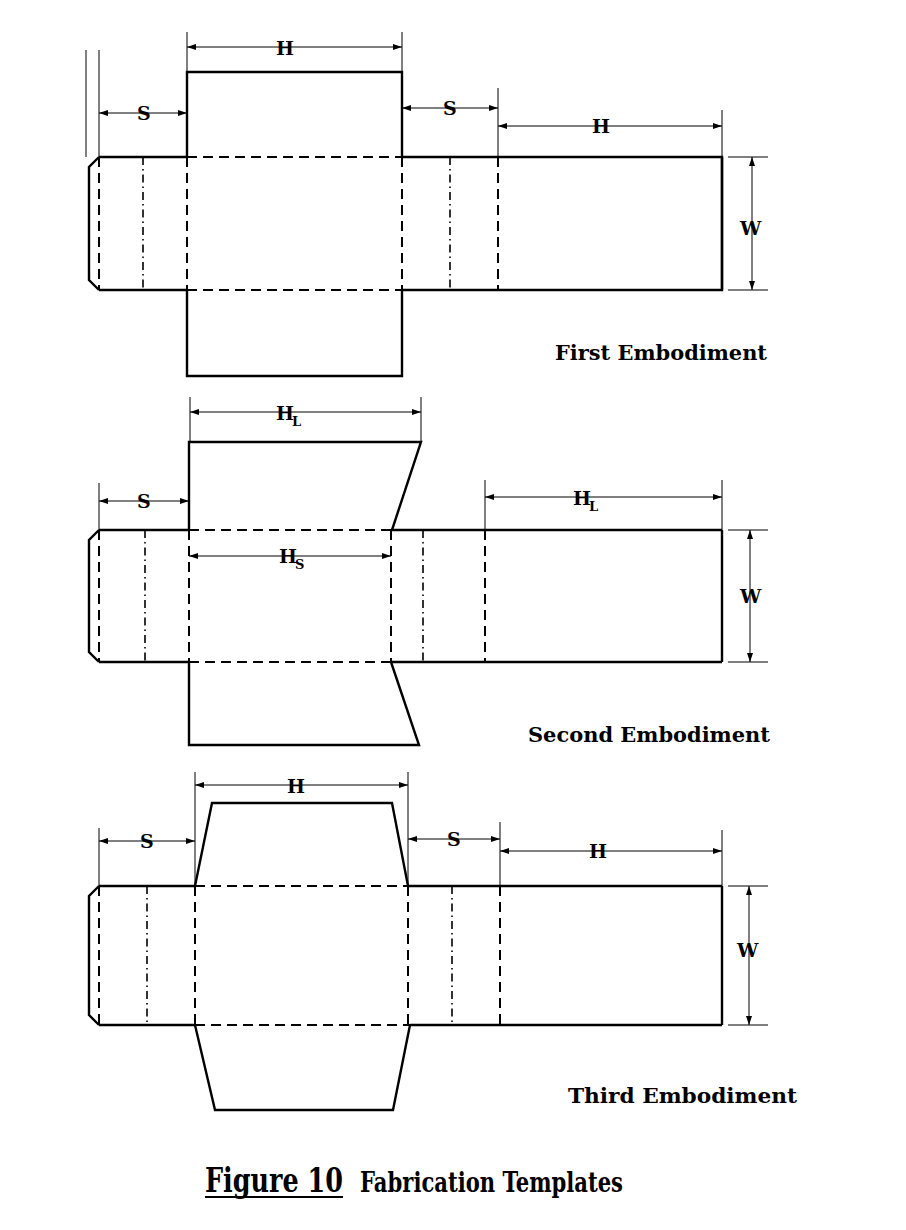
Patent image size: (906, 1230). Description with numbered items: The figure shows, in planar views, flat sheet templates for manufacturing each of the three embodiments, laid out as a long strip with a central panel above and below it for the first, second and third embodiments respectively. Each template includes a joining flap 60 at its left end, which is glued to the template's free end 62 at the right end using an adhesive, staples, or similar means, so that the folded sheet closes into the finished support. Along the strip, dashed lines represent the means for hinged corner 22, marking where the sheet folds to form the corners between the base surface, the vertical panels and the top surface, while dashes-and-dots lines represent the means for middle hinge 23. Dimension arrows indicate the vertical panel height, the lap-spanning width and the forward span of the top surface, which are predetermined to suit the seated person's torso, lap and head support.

The hinged corner 22 is at (97, 203).
The middle hinge 23 is at (143, 243).
The joining flap 60 is at (125, 70).
The free end 62 is at (722, 243).